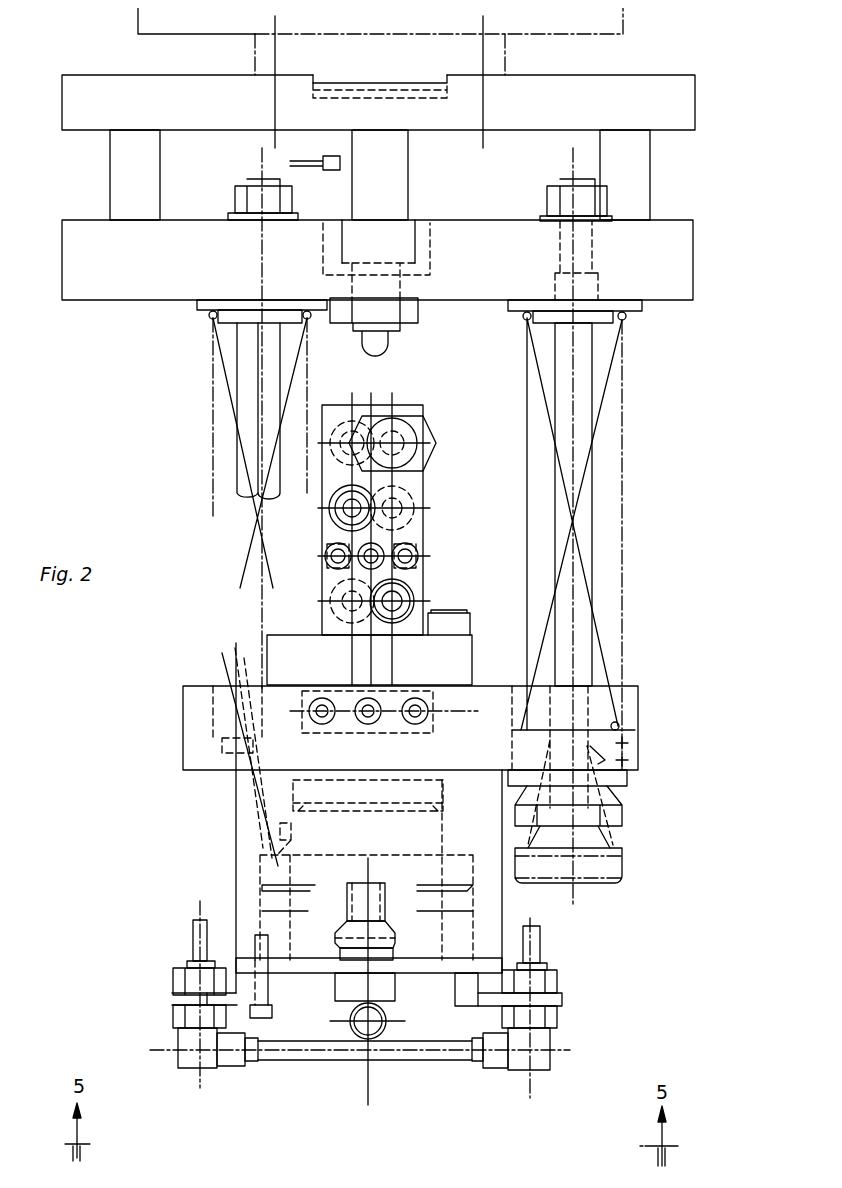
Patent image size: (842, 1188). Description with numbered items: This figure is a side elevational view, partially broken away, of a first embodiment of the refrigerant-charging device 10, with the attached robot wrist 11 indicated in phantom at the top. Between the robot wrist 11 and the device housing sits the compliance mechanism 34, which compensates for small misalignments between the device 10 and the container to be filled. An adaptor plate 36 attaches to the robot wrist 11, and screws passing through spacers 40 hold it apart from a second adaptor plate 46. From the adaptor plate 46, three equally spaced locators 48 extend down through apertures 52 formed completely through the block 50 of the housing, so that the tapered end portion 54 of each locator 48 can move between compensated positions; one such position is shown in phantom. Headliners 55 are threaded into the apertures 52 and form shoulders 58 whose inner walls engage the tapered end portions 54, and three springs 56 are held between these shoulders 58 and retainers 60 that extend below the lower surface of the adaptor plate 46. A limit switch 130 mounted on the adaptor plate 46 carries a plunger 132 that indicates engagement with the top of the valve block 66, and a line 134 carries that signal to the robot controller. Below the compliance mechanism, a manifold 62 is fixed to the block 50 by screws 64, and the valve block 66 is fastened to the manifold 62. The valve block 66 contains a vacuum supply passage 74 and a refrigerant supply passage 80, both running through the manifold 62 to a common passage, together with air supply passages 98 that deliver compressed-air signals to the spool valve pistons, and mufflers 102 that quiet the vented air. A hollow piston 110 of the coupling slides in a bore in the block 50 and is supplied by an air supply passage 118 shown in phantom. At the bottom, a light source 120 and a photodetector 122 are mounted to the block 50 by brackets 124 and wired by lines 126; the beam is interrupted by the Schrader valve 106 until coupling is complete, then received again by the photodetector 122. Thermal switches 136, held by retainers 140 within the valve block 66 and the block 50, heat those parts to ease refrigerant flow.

The device 10 is at (660, 577).
The robot wrist 11 is at (623, 27).
The compliance mechanism 34 is at (754, 236).
The adaptor plate 36 is at (695, 108).
The spacers 40 is at (650, 180).
The second adaptor plate 46 is at (693, 265).
The locators 48 is at (280, 375).
The block 50 is at (638, 712).
The apertures 52 is at (635, 763).
The tapered end portion 54 is at (605, 820).
The headliners 55 is at (605, 787).
The springs 56 is at (307, 345).
The shoulders 58 is at (635, 742).
The retainers 60 is at (200, 305).
The manifold 62 is at (472, 655).
The screws 64 is at (455, 610).
The valve block 66 is at (400, 407).
The vacuum supply passage 74 is at (425, 590).
The refrigerant supply passage 80 is at (340, 604).
The air supply passages 98 is at (425, 493).
The mufflers 102 is at (420, 432).
The Schrader valve 106 is at (392, 995).
The hollow piston 110 is at (455, 920).
The air supply passage 118 is at (248, 795).
The light source 120 is at (235, 1070).
The photodetector 122 is at (540, 1073).
The brackets 124 is at (270, 1000).
The lines 126 is at (192, 940).
The limit switch 130 is at (408, 188).
The plunger 132 is at (392, 350).
The line 134 is at (307, 152).
The thermal switches 136 is at (330, 565).
The retainers 140 is at (425, 555).